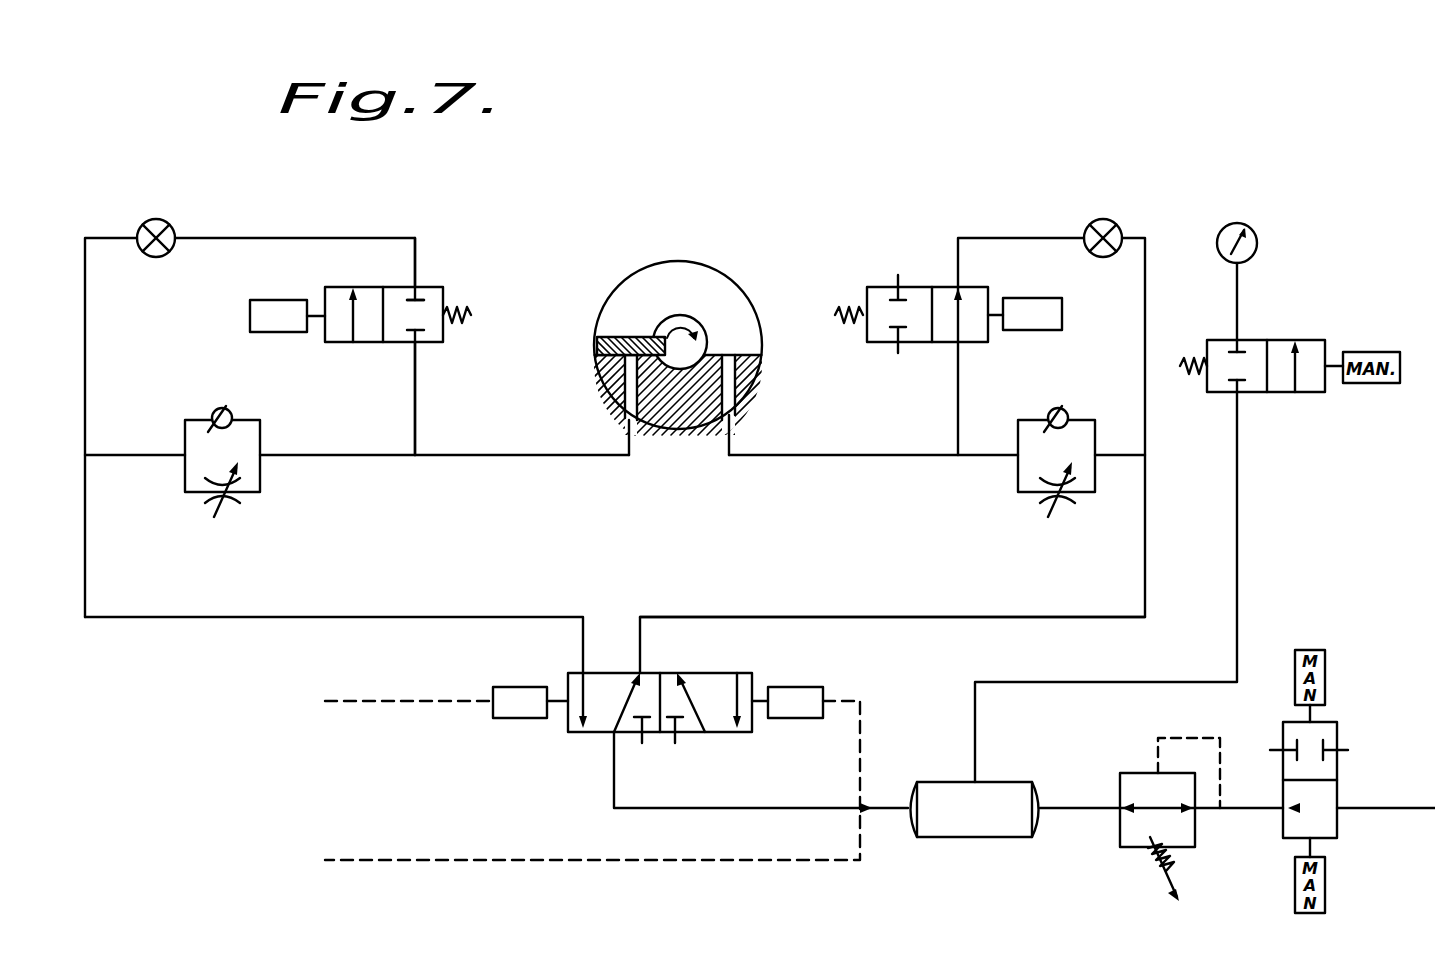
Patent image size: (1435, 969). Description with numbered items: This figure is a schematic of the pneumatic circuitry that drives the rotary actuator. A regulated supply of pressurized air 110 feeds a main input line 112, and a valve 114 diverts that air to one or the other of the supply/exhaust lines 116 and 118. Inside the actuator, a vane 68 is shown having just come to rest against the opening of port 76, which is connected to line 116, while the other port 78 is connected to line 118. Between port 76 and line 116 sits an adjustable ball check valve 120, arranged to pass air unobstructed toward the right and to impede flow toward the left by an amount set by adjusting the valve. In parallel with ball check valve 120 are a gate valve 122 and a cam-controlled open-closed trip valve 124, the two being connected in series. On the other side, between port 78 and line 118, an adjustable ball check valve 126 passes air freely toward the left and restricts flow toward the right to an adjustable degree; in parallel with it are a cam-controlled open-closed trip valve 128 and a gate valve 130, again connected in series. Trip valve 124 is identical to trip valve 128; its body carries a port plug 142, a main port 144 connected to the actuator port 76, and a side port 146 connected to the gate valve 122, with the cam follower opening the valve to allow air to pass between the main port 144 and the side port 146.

The vane 68 is at (597, 345).
The port 76 is at (630, 405).
The port 78 is at (730, 400).
The regulated supply of pressurized air 110 is at (938, 783).
The main input line 112 is at (703, 808).
The valve 114 is at (560, 725).
The supply/exhaust line 116 is at (457, 575).
The supply/exhaust line 118 is at (737, 615).
The adjustable ball check valve 120 is at (262, 430).
The gate valve 122 is at (173, 227).
The cam-controlled open-closed trip valve 124 is at (408, 345).
The adjustable ball check valve 126 is at (1123, 395).
The cam-controlled open-closed trip valve 128 is at (867, 287).
The gate valve 130 is at (1103, 218).
The port plug 142 is at (443, 292).
The main port 144 is at (417, 390).
The side port 146 is at (417, 272).